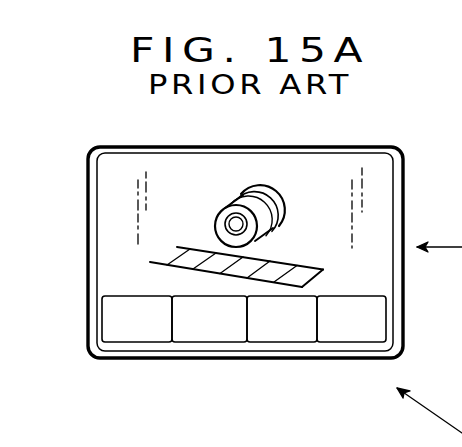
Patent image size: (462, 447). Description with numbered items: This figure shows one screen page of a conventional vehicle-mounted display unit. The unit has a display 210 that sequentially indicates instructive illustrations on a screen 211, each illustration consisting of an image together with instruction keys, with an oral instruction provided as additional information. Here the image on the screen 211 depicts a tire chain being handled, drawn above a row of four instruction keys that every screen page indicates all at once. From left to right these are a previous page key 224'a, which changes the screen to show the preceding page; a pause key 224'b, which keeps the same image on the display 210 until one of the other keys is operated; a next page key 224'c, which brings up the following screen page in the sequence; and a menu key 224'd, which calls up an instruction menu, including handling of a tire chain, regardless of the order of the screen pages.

The display 210 is at (213, 147).
The screen 211 is at (309, 165).
The previous page key 224'a is at (120, 346).
The pause key 224'b is at (199, 346).
The next page key 224'c is at (281, 346).
The menu key 224'd is at (351, 346).